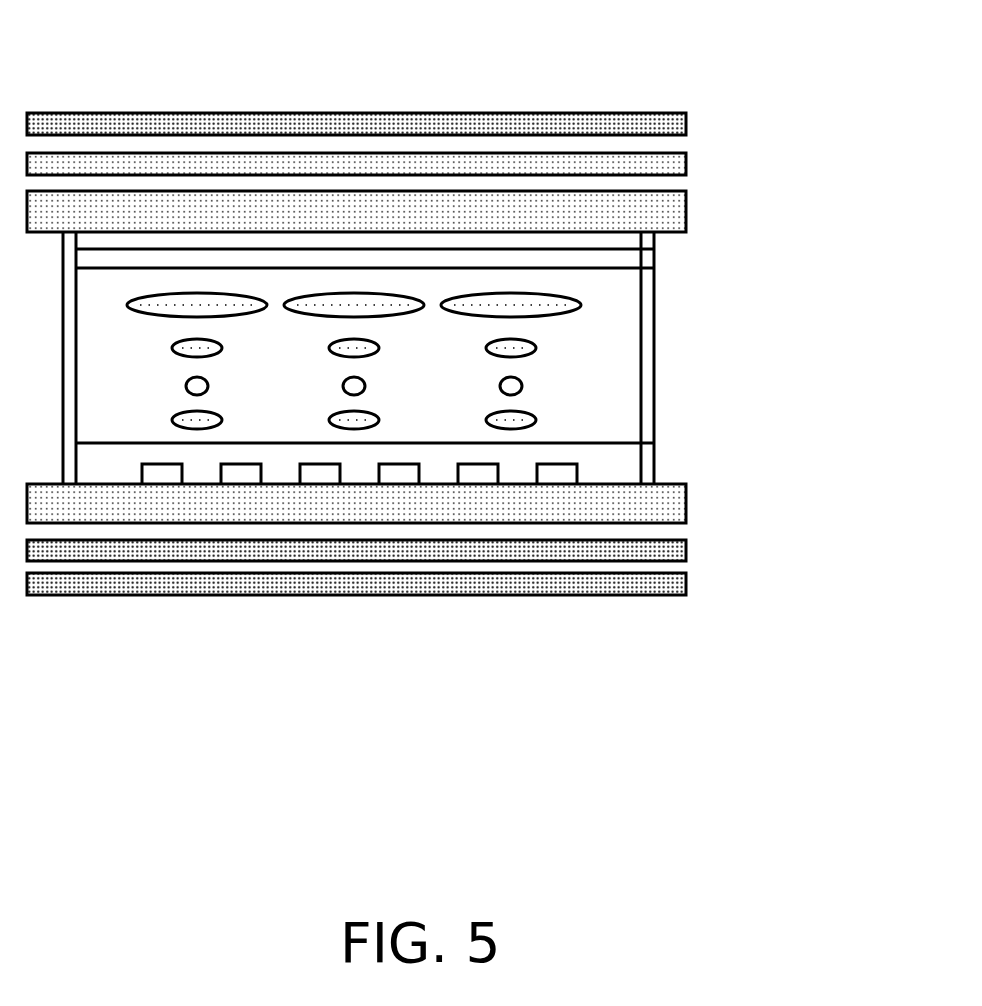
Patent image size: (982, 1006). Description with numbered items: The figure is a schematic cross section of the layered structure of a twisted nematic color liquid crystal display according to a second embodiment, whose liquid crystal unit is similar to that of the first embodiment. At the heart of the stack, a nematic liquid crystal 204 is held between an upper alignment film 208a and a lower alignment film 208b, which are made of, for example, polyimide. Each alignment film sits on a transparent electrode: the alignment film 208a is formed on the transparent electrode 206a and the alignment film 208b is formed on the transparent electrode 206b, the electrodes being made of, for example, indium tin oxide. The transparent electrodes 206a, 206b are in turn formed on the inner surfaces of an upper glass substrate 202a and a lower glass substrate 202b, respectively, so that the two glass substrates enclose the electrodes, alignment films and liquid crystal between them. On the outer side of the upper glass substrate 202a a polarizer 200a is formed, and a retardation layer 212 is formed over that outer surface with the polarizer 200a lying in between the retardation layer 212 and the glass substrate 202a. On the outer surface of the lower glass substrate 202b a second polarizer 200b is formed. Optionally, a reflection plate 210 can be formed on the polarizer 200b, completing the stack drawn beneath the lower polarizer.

The polarizer 200a is at (615, 122).
The retardation layer 212 is at (640, 172).
The glass substrate 202a is at (638, 218).
The transparent electrode 206a is at (603, 245).
The alignment film 208a is at (602, 263).
The nematic liquid crystal 204 is at (598, 360).
The alignment film 208b is at (605, 453).
The transparent electrode 206b is at (552, 475).
The glass substrate 202b is at (643, 508).
The polarizer 200b is at (643, 557).
The reflection plate 210 is at (643, 590).